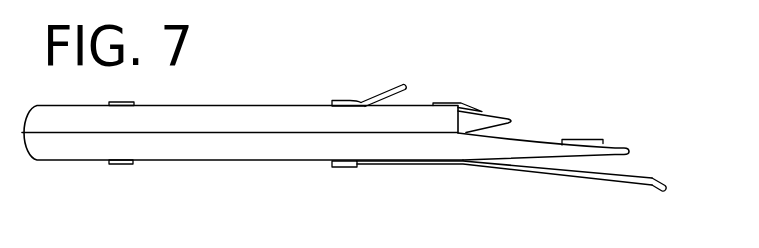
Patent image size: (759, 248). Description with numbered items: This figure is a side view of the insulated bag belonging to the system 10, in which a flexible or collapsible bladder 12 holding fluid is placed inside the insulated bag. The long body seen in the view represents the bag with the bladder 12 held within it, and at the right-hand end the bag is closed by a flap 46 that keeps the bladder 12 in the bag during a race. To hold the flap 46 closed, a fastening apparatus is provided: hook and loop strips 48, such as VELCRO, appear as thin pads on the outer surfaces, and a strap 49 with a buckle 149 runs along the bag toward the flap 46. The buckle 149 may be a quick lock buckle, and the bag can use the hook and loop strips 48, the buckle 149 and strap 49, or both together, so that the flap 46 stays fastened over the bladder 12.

The system 10 is at (163, 180).
The bladder 12 is at (253, 153).
The flap 46 is at (610, 145).
The hook and loop strips 48 is at (450, 100).
The strap 49 is at (362, 100).
The buckle 149 is at (393, 87).